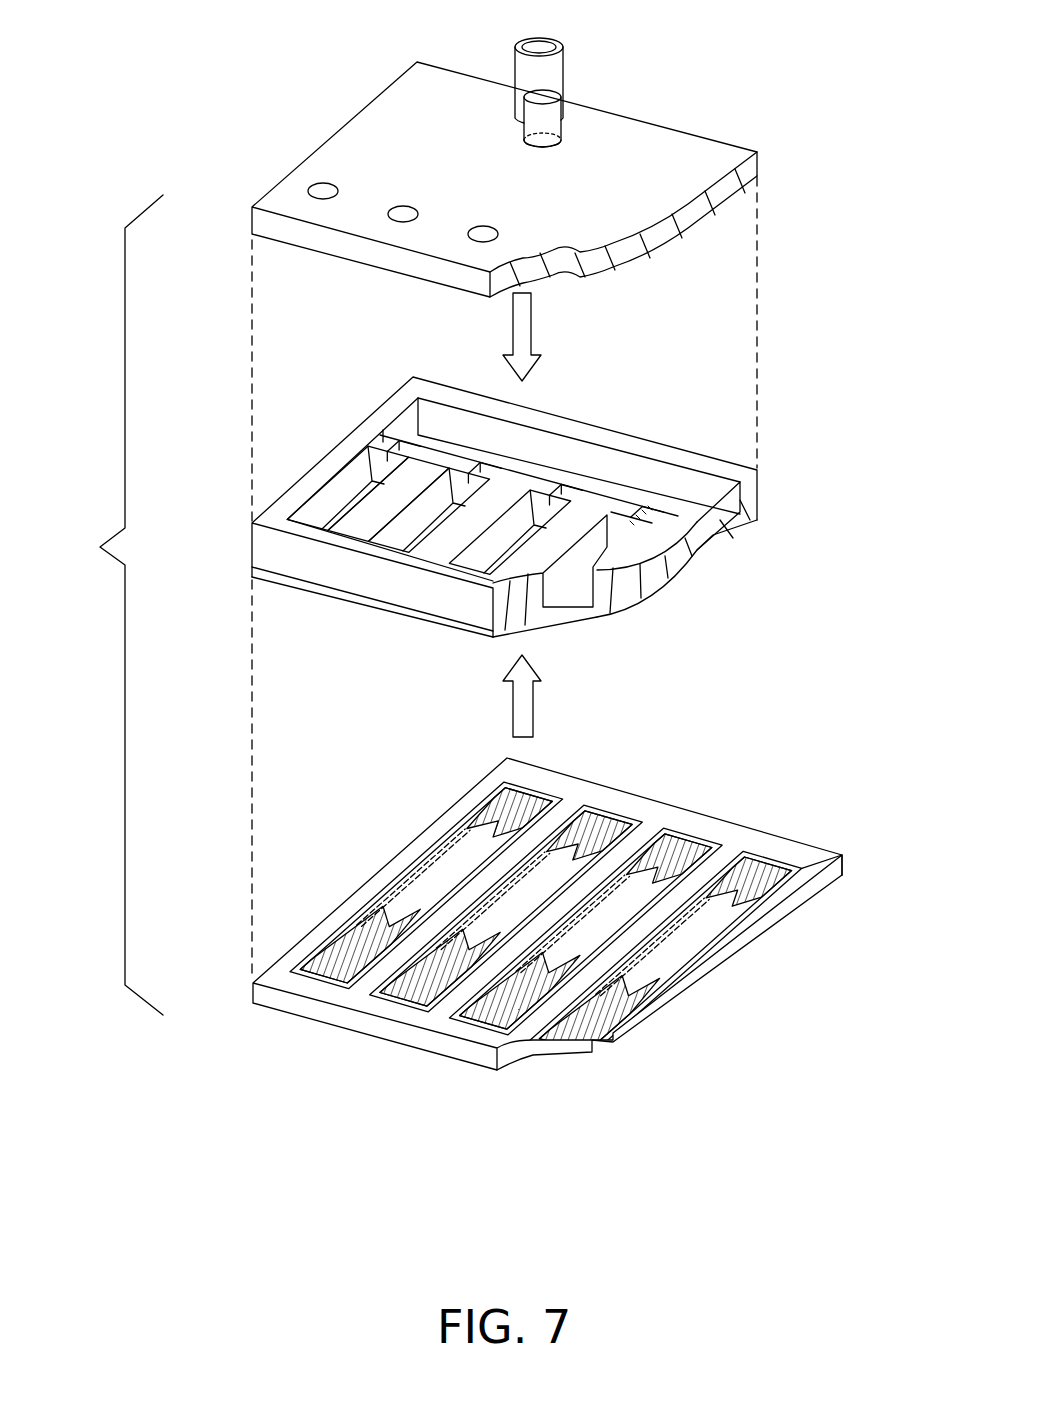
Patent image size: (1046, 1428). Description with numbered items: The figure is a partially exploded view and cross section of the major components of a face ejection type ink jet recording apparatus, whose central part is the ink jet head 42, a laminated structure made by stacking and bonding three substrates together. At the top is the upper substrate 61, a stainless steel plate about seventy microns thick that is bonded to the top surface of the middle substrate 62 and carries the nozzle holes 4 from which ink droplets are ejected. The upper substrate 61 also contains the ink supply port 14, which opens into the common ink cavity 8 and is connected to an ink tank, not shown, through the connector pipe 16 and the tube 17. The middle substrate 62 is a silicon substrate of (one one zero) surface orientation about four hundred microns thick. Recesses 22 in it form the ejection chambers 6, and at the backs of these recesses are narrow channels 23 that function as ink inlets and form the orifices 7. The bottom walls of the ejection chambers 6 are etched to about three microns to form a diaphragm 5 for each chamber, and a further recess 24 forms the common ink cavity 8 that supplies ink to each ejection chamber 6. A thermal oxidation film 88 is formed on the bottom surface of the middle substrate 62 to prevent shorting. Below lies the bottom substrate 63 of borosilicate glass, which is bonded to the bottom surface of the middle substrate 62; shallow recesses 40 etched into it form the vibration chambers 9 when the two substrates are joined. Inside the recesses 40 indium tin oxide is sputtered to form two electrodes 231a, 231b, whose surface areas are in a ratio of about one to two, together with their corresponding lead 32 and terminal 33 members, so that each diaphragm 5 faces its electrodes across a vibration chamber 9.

The nozzle holes 4 is at (317, 184).
The ink supply port 14 is at (513, 120).
The connector pipe 16 is at (560, 100).
The tube 17 is at (550, 72).
The upper substrate 61 is at (697, 207).
The ink jet head 42 is at (401, 596).
The recesses 22 is at (343, 496).
The narrow channels 23 is at (483, 445).
The ejection chambers 6 is at (360, 480).
The common ink cavity 8 is at (608, 478).
The recess 24 is at (712, 500).
The middle substrate 62 is at (693, 573).
The thermal oxidation film 88 is at (323, 593).
The orifices 7 is at (395, 480).
The diaphragm 5 is at (575, 612).
The terminal members 33 is at (768, 870).
The bottom substrate 63 is at (793, 910).
The lead members 32 is at (708, 935).
The electrode 231a is at (598, 1040).
The electrode 231b is at (648, 1000).
The vibration chambers 9 is at (430, 1002).
The recesses 40 is at (563, 1050).